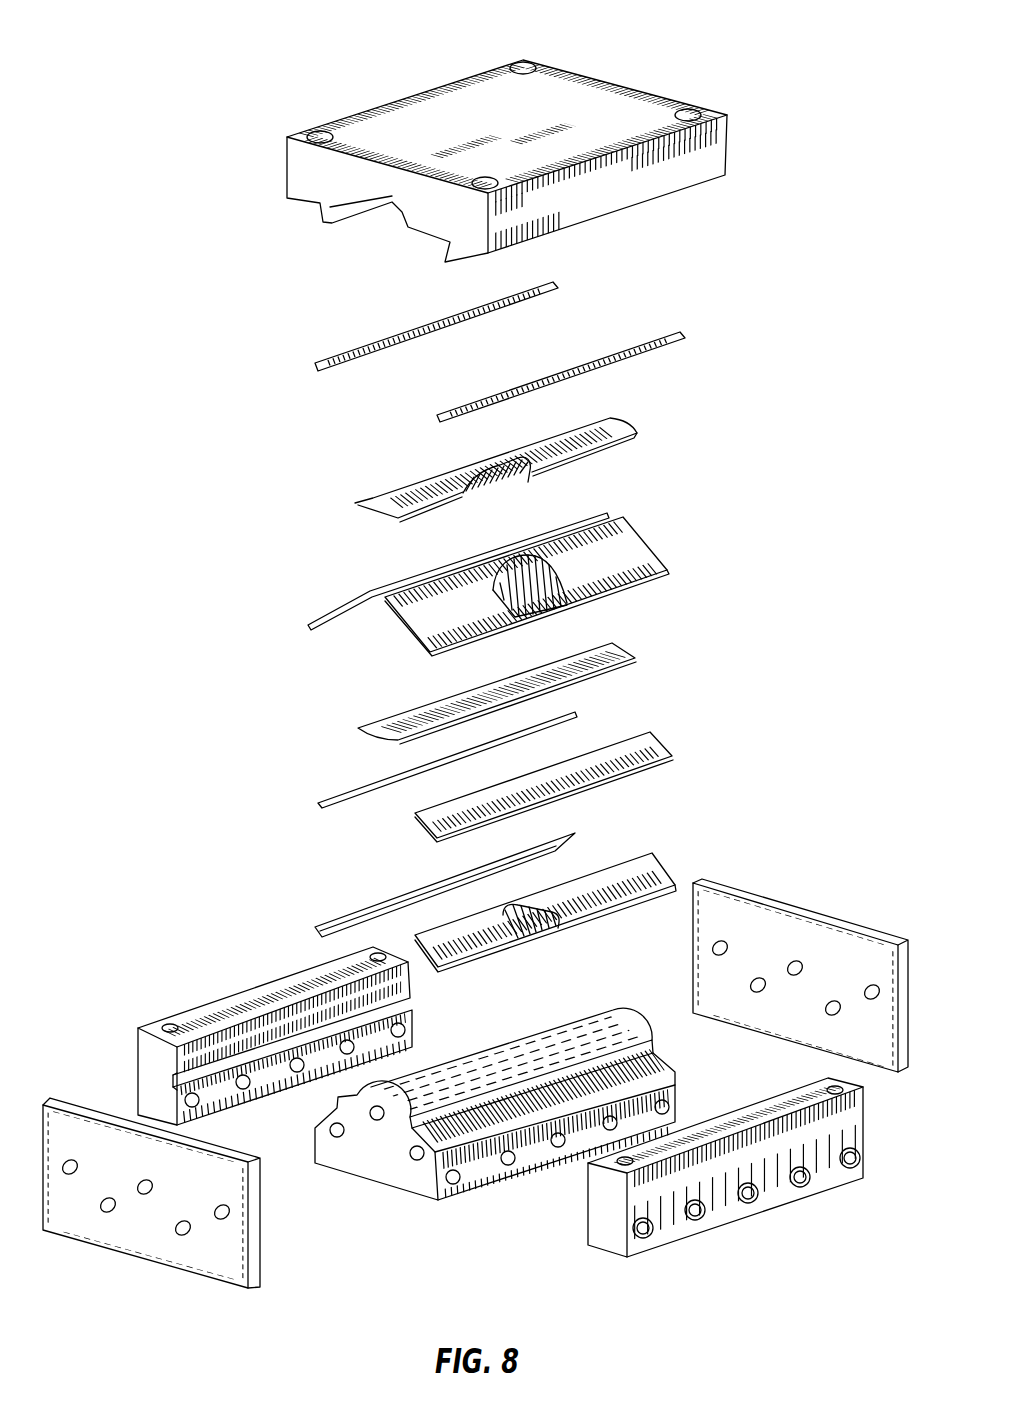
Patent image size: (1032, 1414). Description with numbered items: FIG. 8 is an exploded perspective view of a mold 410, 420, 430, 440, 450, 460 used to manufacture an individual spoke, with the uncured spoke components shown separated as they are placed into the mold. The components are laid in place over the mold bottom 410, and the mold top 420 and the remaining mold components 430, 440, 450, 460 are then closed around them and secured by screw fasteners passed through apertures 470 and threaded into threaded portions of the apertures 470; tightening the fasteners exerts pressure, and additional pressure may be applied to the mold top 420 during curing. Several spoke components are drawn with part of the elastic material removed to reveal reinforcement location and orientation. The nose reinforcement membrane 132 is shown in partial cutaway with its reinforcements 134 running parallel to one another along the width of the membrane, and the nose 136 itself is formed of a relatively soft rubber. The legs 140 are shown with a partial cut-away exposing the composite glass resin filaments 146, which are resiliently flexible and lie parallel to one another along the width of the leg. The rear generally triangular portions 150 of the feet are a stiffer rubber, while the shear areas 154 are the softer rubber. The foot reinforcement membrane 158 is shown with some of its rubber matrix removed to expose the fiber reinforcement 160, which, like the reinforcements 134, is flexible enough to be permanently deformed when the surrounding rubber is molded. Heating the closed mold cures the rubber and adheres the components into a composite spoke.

The nose reinforcement membrane 132 is at (519, 458).
The reinforcements 134 is at (520, 475).
The nose 136 is at (607, 663).
The legs 140 is at (493, 584).
The filaments 146 is at (555, 607).
The rear generally triangular portion 150 is at (362, 345).
The shear areas 154 is at (350, 787).
The foot reinforcement membrane 158 is at (495, 896).
The fiber reinforcement 160 is at (533, 938).
The mold bottom 410 is at (397, 1168).
The mold top 420 is at (598, 93).
The mold component 430 is at (785, 930).
The mold component 440 is at (193, 1255).
The mold component 450 is at (715, 1197).
The mold component 460 is at (150, 1053).
The apertures 470 is at (523, 63).